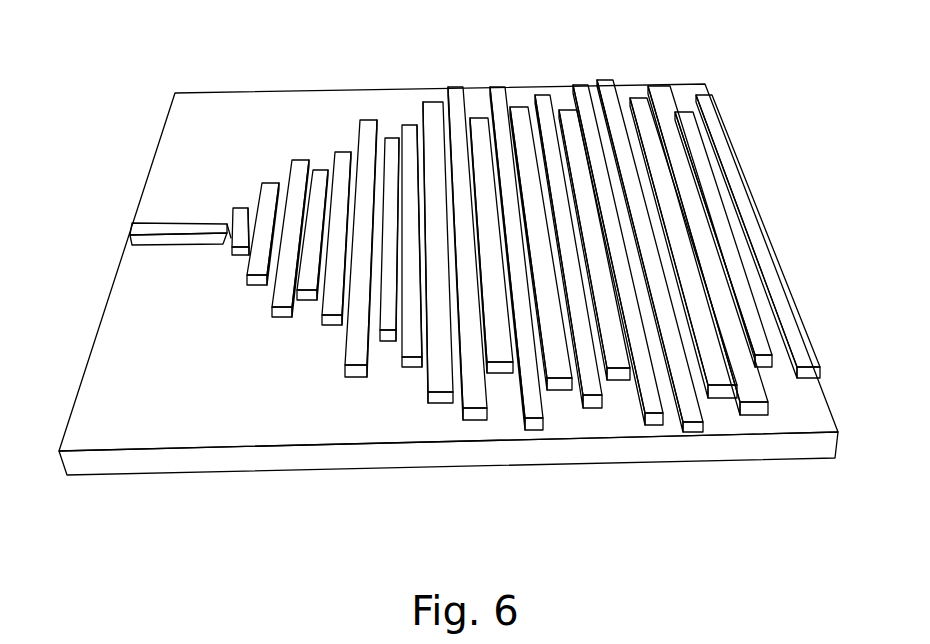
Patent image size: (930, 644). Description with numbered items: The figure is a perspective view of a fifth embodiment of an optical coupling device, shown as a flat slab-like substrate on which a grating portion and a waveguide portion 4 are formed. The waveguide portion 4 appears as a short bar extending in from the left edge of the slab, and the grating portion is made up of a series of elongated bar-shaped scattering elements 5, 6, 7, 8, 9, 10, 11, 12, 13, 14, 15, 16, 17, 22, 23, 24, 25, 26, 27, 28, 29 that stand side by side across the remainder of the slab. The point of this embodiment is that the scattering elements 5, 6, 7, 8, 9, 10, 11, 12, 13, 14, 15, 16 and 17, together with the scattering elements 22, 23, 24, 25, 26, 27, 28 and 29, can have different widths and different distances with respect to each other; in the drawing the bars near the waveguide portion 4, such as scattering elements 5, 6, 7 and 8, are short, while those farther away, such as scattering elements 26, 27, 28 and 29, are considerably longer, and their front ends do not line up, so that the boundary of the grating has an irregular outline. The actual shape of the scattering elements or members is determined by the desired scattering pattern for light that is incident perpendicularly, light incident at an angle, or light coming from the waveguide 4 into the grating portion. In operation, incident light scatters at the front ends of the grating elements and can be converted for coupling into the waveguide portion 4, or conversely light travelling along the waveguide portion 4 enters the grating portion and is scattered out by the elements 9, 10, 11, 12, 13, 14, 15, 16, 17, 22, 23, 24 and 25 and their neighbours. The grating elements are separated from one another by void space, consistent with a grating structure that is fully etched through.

The waveguide portion 4 is at (158, 222).
The scattering element 5 is at (231, 257).
The scattering element 6 is at (252, 287).
The scattering element 7 is at (277, 318).
The scattering element 8 is at (305, 301).
The scattering element 9 is at (330, 326).
The scattering element 10 is at (348, 378).
The scattering element 11 is at (387, 343).
The scattering element 12 is at (415, 368).
The scattering element 13 is at (433, 100).
The scattering element 14 is at (451, 86).
The scattering element 15 is at (486, 117).
The scattering element 16 is at (497, 86).
The scattering element 17 is at (524, 106).
The scattering element 22 is at (541, 94).
The scattering element 23 is at (566, 109).
The scattering element 24 is at (584, 84).
The scattering element 25 is at (605, 79).
The scattering element 26 is at (644, 97).
The scattering element 27 is at (662, 85).
The scattering element 28 is at (680, 112).
The scattering element 29 is at (718, 107).